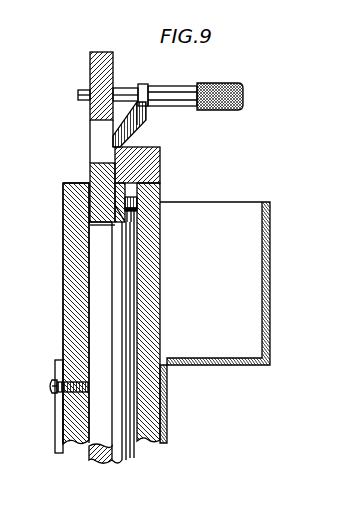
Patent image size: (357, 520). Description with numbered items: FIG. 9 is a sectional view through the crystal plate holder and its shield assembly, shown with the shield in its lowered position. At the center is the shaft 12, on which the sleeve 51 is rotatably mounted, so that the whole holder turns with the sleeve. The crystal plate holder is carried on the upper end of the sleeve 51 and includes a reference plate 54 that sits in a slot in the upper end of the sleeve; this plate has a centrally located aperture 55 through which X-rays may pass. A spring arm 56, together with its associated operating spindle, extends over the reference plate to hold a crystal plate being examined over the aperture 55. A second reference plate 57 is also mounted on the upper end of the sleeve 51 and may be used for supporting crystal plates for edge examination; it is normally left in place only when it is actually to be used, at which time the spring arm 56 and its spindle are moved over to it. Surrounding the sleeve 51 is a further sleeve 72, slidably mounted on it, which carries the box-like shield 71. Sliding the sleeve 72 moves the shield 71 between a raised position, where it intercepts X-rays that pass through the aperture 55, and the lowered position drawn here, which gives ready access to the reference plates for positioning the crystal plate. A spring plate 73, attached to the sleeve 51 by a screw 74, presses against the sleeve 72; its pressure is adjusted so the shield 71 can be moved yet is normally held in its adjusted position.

The shaft 12 is at (122, 460).
The sleeve 51 is at (63, 273).
The reference plate 54 is at (91, 52).
The aperture 55 is at (93, 137).
The spring arm 56 is at (146, 123).
The reference plate 57 is at (160, 163).
The box-like shield 71 is at (277, 283).
The sleeve 72 is at (165, 418).
The spring plate 73 is at (55, 398).
The screw 74 is at (52, 382).